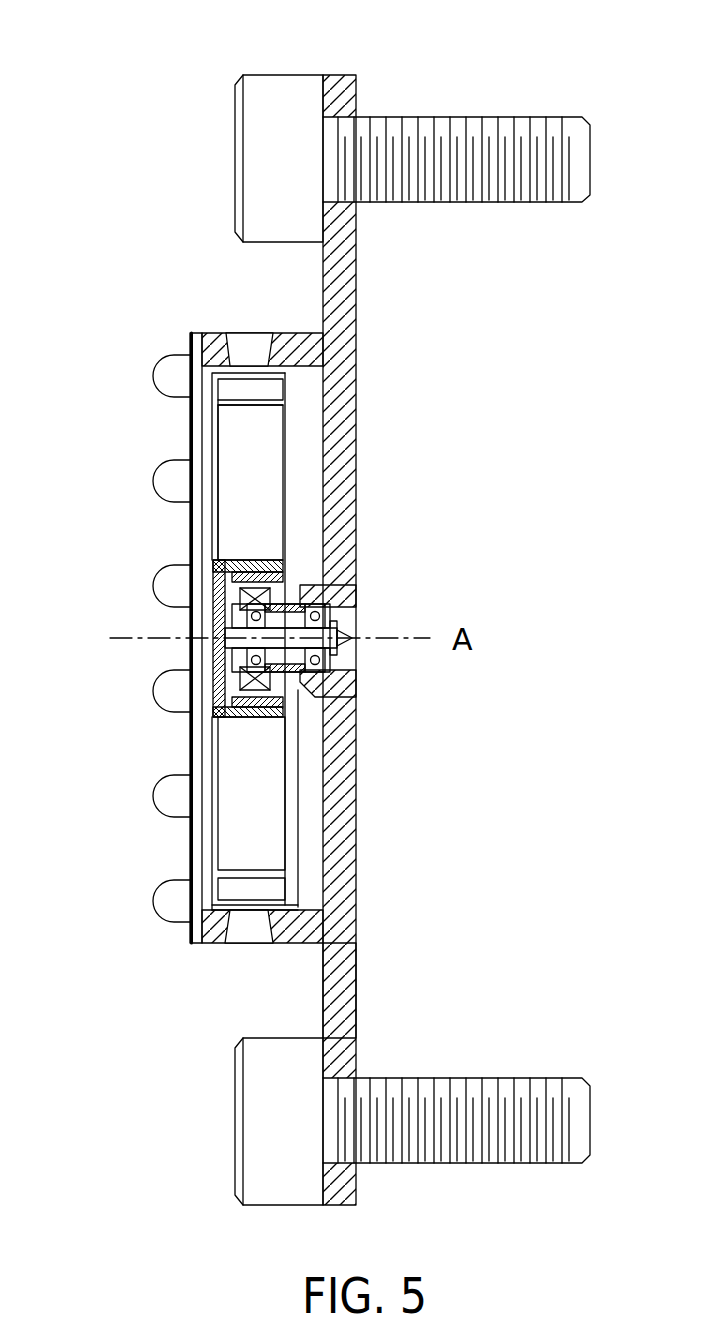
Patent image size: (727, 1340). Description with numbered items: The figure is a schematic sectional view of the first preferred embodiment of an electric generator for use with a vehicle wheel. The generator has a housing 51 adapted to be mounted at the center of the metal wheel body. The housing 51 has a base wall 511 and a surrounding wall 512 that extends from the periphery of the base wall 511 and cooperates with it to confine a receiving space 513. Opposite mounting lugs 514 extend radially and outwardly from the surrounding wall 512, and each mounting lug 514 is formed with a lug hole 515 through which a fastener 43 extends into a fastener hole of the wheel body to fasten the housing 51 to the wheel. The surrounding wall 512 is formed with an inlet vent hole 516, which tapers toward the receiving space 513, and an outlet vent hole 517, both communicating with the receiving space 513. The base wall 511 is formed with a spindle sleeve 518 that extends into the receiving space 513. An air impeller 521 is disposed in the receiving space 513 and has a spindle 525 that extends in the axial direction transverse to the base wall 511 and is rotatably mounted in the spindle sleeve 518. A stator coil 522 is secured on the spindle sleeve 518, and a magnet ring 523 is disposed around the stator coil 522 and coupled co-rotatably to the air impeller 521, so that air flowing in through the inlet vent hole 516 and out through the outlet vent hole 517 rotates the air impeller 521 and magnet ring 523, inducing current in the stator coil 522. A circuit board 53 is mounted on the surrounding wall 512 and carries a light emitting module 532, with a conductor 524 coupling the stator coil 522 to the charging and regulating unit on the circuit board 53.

The fastener 43 is at (255, 1132).
The housing 51 is at (372, 762).
The circuit board 53 is at (192, 345).
The base wall 511 is at (357, 850).
The surrounding wall 512 is at (307, 948).
The receiving space 513 is at (303, 515).
The mounting lug 514 is at (345, 75).
The lug hole 515 is at (337, 118).
The inlet vent hole 516 is at (240, 345).
The outlet vent hole 517 is at (245, 932).
The spindle sleeve 518 is at (300, 600).
The air impeller 521 is at (285, 432).
The stator coil 522 is at (250, 573).
The magnet ring 523 is at (262, 723).
The conductor 524 is at (298, 888).
The spindle 525 is at (323, 672).
The light emitting module 532 is at (158, 483).